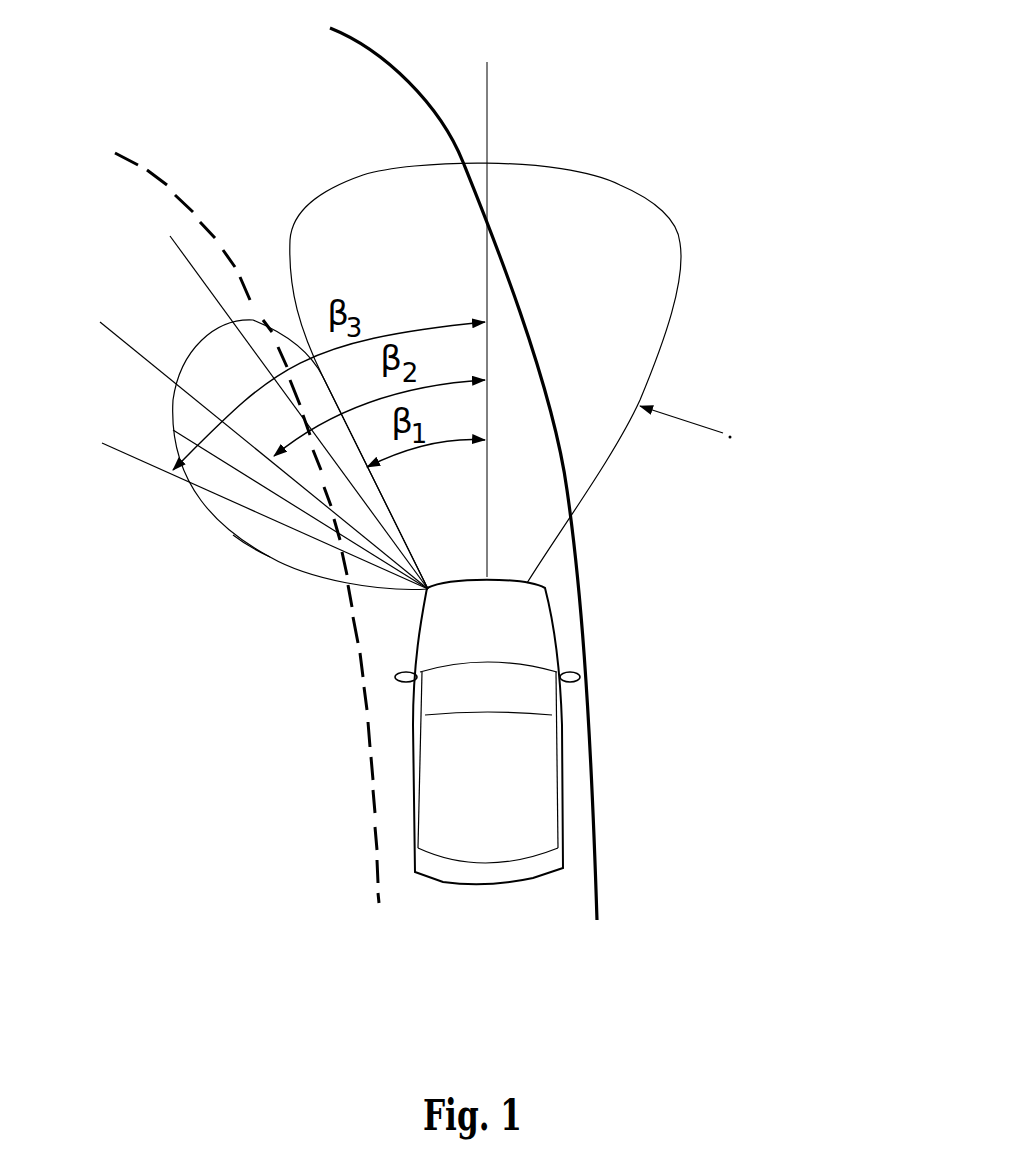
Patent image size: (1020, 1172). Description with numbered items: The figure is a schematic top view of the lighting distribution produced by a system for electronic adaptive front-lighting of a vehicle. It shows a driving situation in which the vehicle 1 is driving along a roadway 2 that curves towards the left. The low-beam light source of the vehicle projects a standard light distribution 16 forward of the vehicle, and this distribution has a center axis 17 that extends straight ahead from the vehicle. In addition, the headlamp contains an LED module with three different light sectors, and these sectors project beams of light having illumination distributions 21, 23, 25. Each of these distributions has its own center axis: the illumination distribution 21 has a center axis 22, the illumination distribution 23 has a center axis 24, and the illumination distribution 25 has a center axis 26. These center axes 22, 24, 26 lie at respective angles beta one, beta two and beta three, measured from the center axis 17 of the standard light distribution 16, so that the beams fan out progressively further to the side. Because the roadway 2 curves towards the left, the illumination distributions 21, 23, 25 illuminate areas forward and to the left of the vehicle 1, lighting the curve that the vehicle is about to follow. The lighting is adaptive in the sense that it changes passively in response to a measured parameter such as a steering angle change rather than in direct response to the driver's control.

The vehicle 1 is at (537, 817).
The roadway 2 is at (582, 560).
The standard light distribution 16 is at (657, 293).
The center axis 17 is at (486, 304).
The illumination distribution 21 is at (247, 316).
The center axis 22 is at (283, 396).
The illumination distribution 23 is at (186, 357).
The center axis 24 is at (245, 438).
The illumination distribution 25 is at (268, 561).
The center axis 26 is at (244, 502).